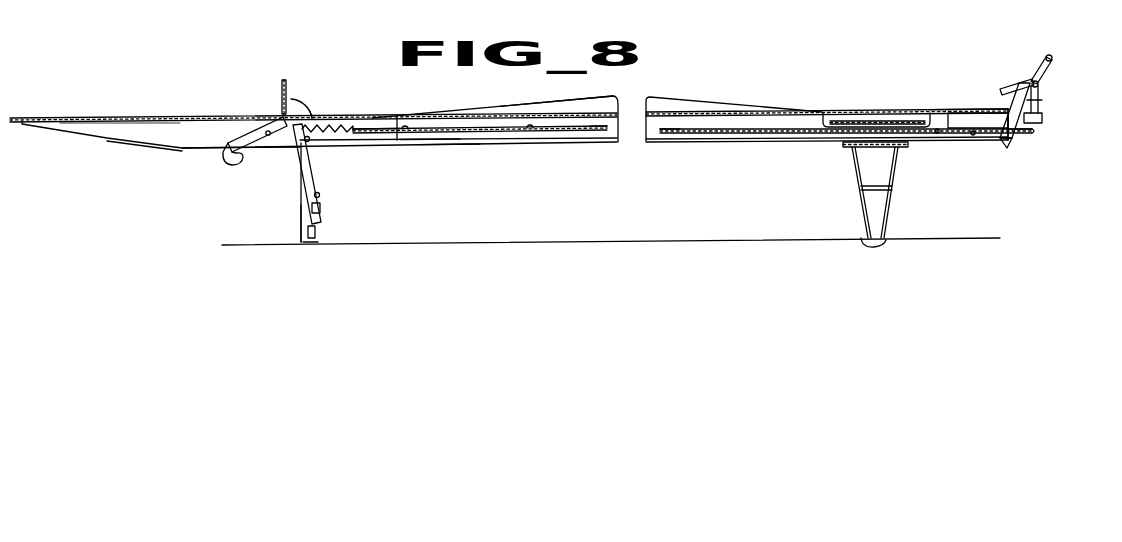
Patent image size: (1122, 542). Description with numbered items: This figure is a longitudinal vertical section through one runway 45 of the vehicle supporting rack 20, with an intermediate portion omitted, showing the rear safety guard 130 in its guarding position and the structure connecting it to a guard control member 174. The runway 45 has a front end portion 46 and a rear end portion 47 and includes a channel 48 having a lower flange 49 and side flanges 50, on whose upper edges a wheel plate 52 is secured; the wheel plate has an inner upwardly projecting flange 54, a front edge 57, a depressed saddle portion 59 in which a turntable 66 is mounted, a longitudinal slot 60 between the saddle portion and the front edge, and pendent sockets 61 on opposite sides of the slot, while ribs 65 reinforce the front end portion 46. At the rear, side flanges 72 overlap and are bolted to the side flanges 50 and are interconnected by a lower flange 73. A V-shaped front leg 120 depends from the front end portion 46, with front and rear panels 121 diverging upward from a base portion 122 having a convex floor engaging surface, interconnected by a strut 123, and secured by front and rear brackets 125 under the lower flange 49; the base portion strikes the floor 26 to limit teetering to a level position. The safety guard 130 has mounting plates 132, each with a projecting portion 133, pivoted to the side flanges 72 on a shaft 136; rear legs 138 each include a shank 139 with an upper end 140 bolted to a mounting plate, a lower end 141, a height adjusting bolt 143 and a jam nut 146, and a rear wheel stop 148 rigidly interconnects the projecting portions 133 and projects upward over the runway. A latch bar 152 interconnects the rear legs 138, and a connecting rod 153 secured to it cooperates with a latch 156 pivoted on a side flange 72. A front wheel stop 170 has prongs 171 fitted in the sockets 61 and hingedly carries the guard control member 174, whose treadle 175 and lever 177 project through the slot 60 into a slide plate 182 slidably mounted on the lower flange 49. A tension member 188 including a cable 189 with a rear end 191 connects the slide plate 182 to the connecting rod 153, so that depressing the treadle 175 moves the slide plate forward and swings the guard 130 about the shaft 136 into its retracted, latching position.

The vehicle supporting rack 20 is at (755, 99).
The floor 26 is at (510, 243).
The runway 45 is at (598, 112).
The front end portion 46 is at (992, 110).
The rear end portion 47 is at (123, 116).
The channel 48 is at (568, 142).
The lower flange 49 is at (453, 142).
The side flanges 50 is at (438, 141).
The wheel plate 52 is at (523, 113).
The inner upwardly projecting flange 54 is at (548, 110).
The front edge 57 is at (1043, 116).
The depressed saddle portion 59 is at (870, 124).
The longitudinal slot 60 is at (1020, 124).
The pendent sockets 61 is at (1040, 122).
The ribs 65 is at (958, 120).
The turntable 66 is at (853, 113).
The side flanges 72 is at (167, 134).
The lower flange 73 is at (130, 147).
The V-shaped front leg 120 is at (871, 197).
The front and rear panels 121 is at (859, 183).
The base portion 122 is at (864, 243).
The strut 123 is at (893, 189).
The front and rear brackets 125 is at (853, 149).
The rear safety guard 130 is at (293, 99).
The mounting plates 132 is at (308, 114).
The projecting portion 133 is at (299, 99).
The shaft 136 is at (311, 141).
The rear legs 138 is at (282, 187).
The shank 139 is at (300, 197).
The upper end 140 is at (313, 153).
The lower end 141 is at (315, 226).
The height adjusting bolt 143 is at (304, 236).
The jam nut 146 is at (303, 224).
The rear wheel stop 148 is at (282, 92).
The latch bar 152 is at (321, 208).
The connecting rod 153 is at (320, 190).
The latch 156 is at (255, 133).
The front wheel stop 170 is at (1055, 50).
The prongs 171 is at (1039, 86).
The guard control member 174 is at (1032, 68).
The treadle 175 is at (1013, 82).
The lever 177 is at (1040, 100).
The slide plate 182 is at (1000, 144).
The tension member 188 is at (430, 128).
The cable 189 is at (667, 136).
The rear end 191 is at (375, 127).